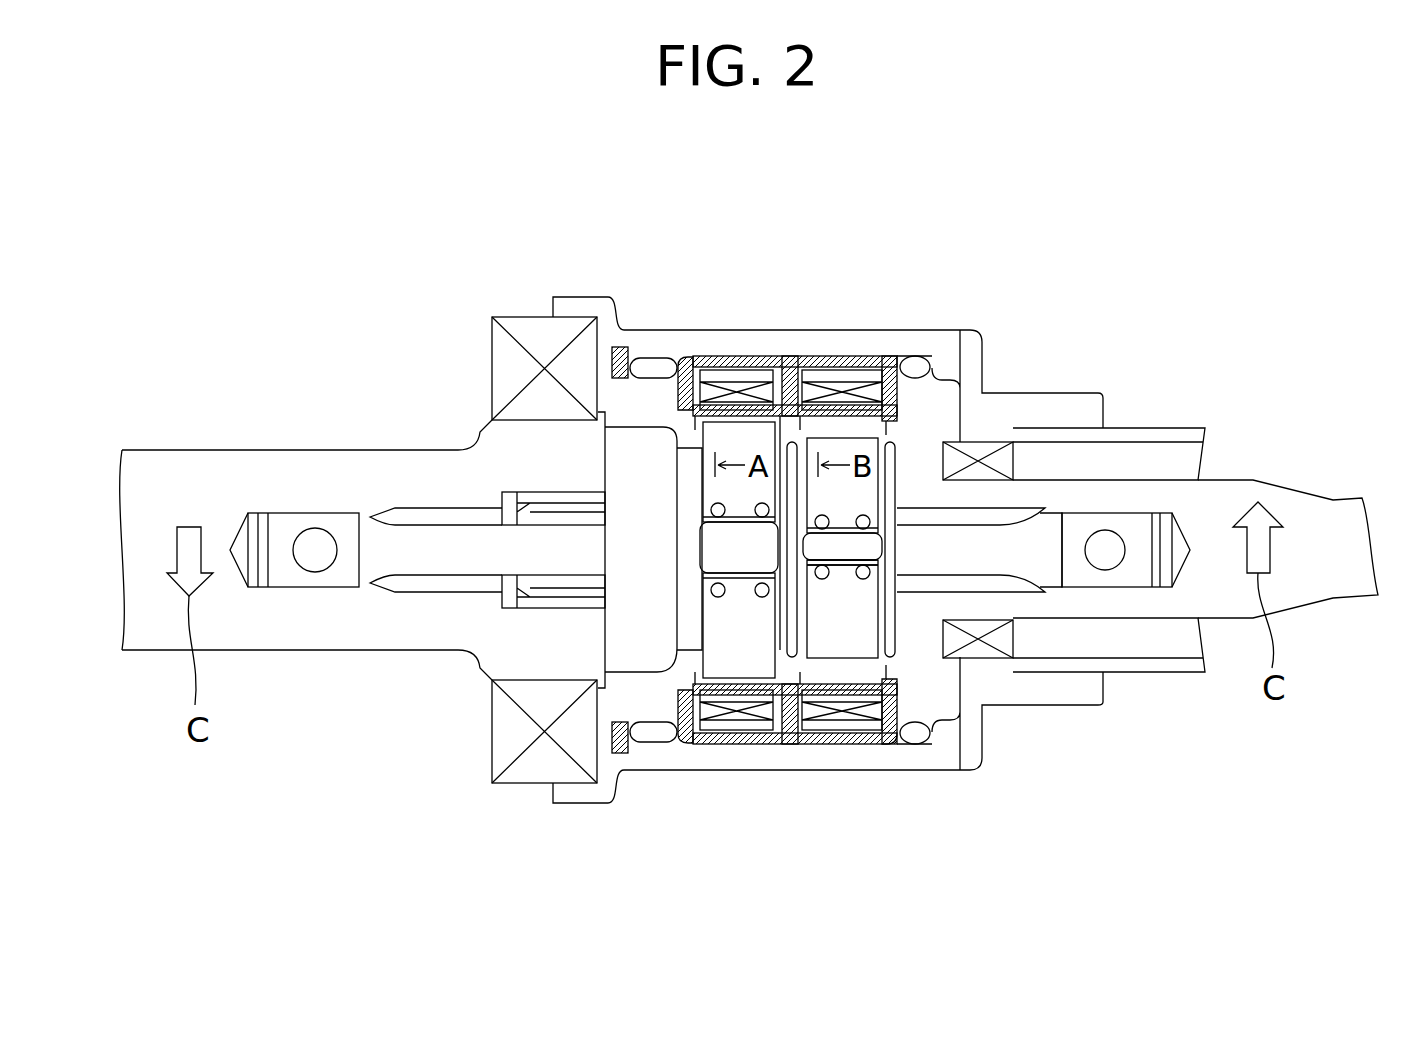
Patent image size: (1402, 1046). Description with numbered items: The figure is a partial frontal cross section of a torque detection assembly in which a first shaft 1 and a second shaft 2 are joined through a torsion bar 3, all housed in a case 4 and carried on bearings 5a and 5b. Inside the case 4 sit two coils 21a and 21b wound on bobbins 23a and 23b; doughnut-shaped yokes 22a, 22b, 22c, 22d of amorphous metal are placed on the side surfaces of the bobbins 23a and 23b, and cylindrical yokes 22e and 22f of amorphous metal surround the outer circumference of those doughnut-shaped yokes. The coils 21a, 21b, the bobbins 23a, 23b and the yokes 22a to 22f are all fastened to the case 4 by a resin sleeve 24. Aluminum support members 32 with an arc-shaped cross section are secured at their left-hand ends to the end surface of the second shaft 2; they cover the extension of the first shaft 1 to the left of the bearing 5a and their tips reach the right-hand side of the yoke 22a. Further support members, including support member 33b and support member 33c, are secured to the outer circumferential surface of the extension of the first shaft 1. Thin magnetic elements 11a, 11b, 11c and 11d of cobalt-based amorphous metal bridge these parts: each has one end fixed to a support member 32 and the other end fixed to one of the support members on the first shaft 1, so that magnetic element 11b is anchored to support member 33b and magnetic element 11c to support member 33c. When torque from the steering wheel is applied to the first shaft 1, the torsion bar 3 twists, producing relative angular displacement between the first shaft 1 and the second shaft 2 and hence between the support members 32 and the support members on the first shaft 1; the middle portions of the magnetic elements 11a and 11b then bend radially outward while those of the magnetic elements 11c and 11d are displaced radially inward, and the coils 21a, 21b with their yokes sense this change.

The first shaft 1 is at (1303, 502).
The second shaft 2 is at (310, 450).
The torsion bar 3 is at (458, 563).
The case 4 is at (963, 332).
The bearing 5a is at (982, 447).
The bearing 5b is at (503, 367).
The magnetic element 11a is at (713, 633).
The magnetic element 11b is at (692, 498).
The magnetic element 11c is at (870, 623).
The magnetic element 11d is at (868, 495).
The coil 21a is at (846, 378).
The coil 21b is at (745, 378).
The yoke 22a is at (913, 357).
The yoke 22b is at (790, 355).
The yoke 22c is at (765, 358).
The yoke 22d is at (637, 372).
The yoke 22e is at (886, 355).
The yoke 22f is at (693, 358).
The bobbin 23a is at (837, 720).
The bobbin 23b is at (737, 720).
The resin sleeve 24 is at (858, 748).
The support member 32 is at (635, 628).
The support member 33b is at (703, 508).
The support member 33c is at (880, 573).